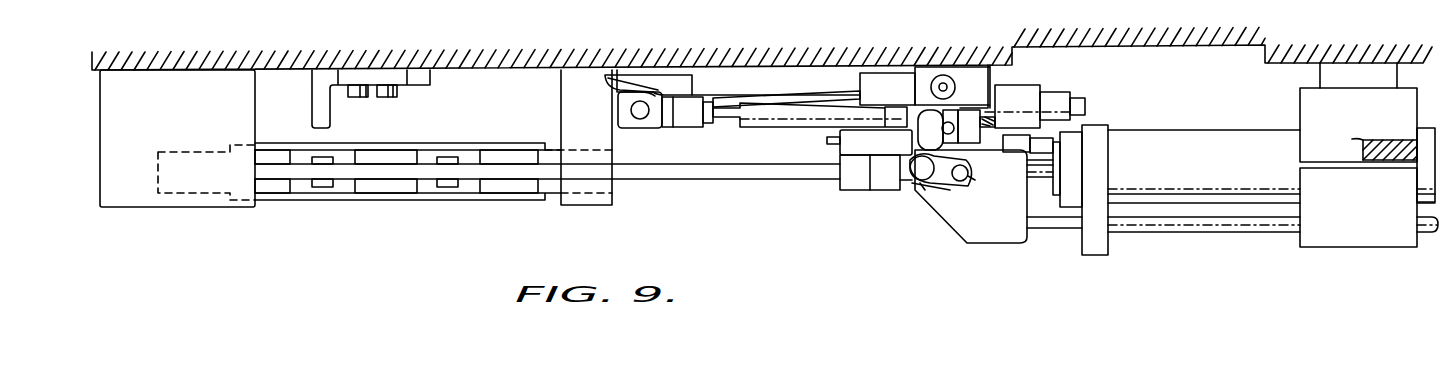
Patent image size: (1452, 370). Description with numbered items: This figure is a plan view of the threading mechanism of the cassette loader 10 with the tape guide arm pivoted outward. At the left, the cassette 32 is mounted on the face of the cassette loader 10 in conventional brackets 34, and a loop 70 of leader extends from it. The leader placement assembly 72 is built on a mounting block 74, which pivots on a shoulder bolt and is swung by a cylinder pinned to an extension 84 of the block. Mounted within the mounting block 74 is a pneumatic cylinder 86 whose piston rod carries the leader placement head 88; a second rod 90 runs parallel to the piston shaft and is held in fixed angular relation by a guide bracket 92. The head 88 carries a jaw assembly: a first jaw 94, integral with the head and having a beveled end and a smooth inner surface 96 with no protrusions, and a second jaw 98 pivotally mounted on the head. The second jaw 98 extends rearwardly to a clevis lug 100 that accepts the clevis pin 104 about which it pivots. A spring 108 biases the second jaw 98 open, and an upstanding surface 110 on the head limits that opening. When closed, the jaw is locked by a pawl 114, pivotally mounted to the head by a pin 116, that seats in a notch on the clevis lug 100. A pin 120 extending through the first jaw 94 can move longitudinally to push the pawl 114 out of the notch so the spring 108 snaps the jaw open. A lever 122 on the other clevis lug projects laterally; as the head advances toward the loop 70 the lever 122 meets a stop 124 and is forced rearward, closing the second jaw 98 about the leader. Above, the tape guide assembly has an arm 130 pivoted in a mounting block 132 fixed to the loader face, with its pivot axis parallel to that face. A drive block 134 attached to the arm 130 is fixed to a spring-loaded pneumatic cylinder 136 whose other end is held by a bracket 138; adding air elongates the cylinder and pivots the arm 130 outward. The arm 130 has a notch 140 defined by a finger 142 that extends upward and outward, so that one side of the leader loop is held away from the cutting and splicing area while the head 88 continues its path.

The cassette loader 10 is at (1233, 49).
The cassette 32 is at (278, 200).
The brackets 34 is at (177, 207).
The loop 70 is at (728, 173).
The leader placement assembly 72 is at (1284, 247).
The mounting block 74 is at (1388, 232).
The extension 84 is at (1375, 140).
The pneumatic cylinder 86 is at (1177, 133).
The leader placement head 88 is at (1003, 243).
The second rod 90 is at (1186, 226).
The guide bracket 92 is at (1093, 256).
The first jaw 94 is at (837, 158).
The smooth inner surface 96 is at (880, 164).
The second jaw 98 is at (895, 186).
The clevis lug 100 is at (920, 172).
The clevis pin 104 is at (916, 190).
The spring 108 is at (936, 190).
The upstanding surface 110 is at (920, 192).
The pawl 114 is at (975, 158).
The pin 116 is at (968, 176).
The pin 120 is at (827, 141).
The lever 122 is at (929, 86).
The stop 124 is at (312, 100).
The arm 130 is at (720, 95).
The mounting block 132 is at (972, 66).
The drive block 134 is at (1000, 113).
The pneumatic cylinder 136 is at (748, 114).
The bracket 138 is at (625, 128).
The notch 140 is at (638, 92).
The finger 142 is at (643, 74).